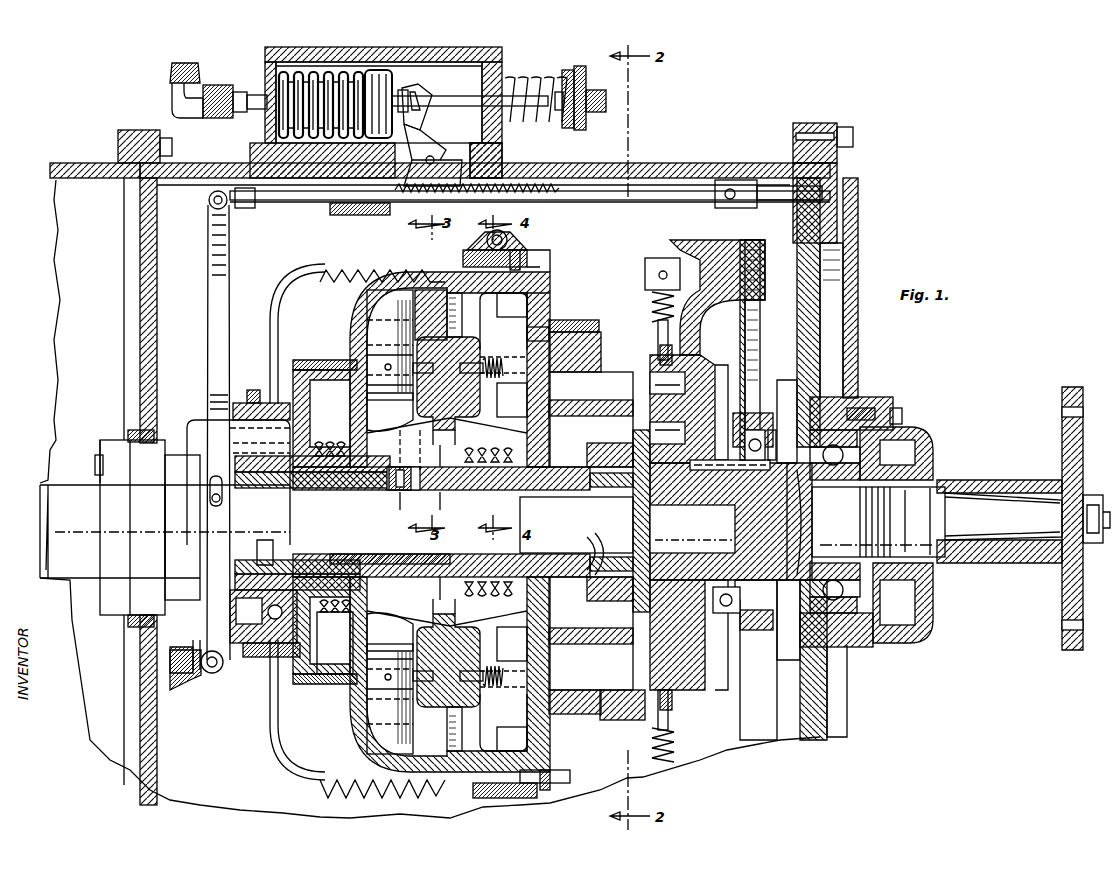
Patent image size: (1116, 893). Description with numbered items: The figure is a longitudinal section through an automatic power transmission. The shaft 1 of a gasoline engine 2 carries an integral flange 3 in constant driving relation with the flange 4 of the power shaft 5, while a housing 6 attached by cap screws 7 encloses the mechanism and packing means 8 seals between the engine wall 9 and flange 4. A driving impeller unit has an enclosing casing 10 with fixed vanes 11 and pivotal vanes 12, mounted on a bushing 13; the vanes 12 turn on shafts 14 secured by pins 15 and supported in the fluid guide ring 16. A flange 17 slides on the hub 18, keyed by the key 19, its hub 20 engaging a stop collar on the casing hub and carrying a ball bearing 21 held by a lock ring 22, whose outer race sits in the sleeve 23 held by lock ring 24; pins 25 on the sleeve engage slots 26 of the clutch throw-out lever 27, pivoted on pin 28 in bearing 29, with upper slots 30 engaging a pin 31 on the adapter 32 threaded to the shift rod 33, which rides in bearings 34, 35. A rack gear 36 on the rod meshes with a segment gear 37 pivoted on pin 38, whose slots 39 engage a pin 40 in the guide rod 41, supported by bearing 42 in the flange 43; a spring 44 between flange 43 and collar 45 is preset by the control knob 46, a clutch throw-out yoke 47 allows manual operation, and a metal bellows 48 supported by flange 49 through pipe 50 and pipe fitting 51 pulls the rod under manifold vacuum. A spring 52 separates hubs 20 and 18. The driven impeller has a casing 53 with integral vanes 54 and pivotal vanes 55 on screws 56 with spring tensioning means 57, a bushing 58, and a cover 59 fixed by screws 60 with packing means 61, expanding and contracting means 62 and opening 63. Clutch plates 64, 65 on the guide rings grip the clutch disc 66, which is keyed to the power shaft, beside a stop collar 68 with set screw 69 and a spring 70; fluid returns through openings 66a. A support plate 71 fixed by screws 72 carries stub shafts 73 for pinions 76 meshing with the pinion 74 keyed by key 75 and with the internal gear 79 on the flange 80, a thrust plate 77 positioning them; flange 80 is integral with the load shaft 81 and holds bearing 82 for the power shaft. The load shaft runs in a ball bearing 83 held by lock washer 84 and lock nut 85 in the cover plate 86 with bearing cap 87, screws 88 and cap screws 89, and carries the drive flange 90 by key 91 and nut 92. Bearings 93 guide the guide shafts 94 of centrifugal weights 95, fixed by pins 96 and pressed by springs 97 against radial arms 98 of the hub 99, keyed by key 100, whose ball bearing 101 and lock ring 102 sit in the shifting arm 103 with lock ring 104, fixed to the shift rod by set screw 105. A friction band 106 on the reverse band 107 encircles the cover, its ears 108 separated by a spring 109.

The shaft 1 is at (50, 505).
The gasoline engine 2 is at (80, 165).
The flange 3 is at (112, 444).
The flange 4 is at (140, 524).
The power shaft 5 is at (178, 500).
The housing 6 is at (200, 165).
The cap screws 7 is at (162, 135).
The packing means 8 is at (130, 430).
The wall 9 is at (158, 340).
The enclosing casing 10 is at (352, 306).
The vanes 11 is at (380, 424).
The vanes 12 is at (356, 745).
The bushing 13 is at (334, 490).
The shafts 14 is at (352, 358).
The pins 15 is at (390, 365).
The fluid guide ring 16 is at (462, 332).
The flange 17 is at (290, 370).
The hub 18 is at (356, 490).
The key 19 is at (330, 598).
The hub 20 is at (266, 542).
The ball bearing 21 is at (335, 643).
The lock ring 22 is at (263, 616).
The sleeve 23 is at (192, 418).
The lock ring 24 is at (248, 648).
The pins 25 is at (224, 518).
The slots 26 is at (224, 530).
The clutch throw-out lever 27 is at (206, 255).
The pin 28 is at (213, 673).
The bearing 29 is at (196, 680).
The slots 30 is at (213, 206).
The pin 31 is at (210, 199).
The adapter 32 is at (250, 206).
The shift rod 33 is at (306, 200).
The bearing 34 is at (360, 214).
The bearing 35 is at (796, 220).
The rack gear 36 is at (530, 188).
The segment gear 37 is at (433, 171).
The pin 38 is at (432, 138).
The slots 39 is at (428, 126).
The pin 40 is at (420, 92).
The guide rod 41 is at (457, 96).
The bearing 42 is at (508, 176).
The flange 43 is at (500, 64).
The spring 44 is at (540, 74).
The collar 45 is at (568, 68).
The control knob 46 is at (585, 118).
The clutch throw-out yoke 47 is at (586, 68).
The metal bellows 48 is at (250, 90).
The flange 49 is at (268, 62).
The pipe 50 is at (252, 108).
The pipe fitting 51 is at (178, 66).
The spring 52 is at (334, 442).
The enclosing casing 53 is at (552, 275).
The vanes 54 is at (464, 268).
The vanes 55 is at (535, 300).
The screws 56 is at (496, 360).
The spring tensioning means 57 is at (520, 416).
The bushing 58 is at (544, 490).
The cover 59 is at (296, 268).
The screws 60 is at (522, 262).
The packing means 61 is at (262, 420).
The expanding and contracting means 62 is at (390, 268).
The opening 63 is at (438, 520).
The clutch plate 64 is at (447, 522).
The clutch plate 65 is at (480, 607).
The clutch disc 66 is at (440, 456).
The openings 66a is at (450, 615).
The stop collar 68 is at (428, 496).
The set screw 69 is at (392, 492).
The spring 70 is at (498, 598).
The support plate 71 is at (572, 322).
The screws 72 is at (600, 324).
The stub shafts 73 is at (591, 531).
The pinion 74 is at (600, 548).
The key 75 is at (612, 505).
The pinions 76 is at (660, 385).
The thrust plate 77 is at (680, 415).
The internal gear 79 is at (610, 722).
The flange 80 is at (718, 380).
The load shaft 81 is at (944, 580).
The bearing 82 is at (676, 505).
The ball bearing 83 is at (850, 410).
The lock washer 84 is at (858, 455).
The lock nut 85 is at (915, 455).
The cover plate 86 is at (826, 320).
The bearing cap 87 is at (874, 402).
The screws 88 is at (898, 406).
The cap screws 89 is at (848, 130).
The drive flange 90 is at (1062, 398).
The key 91 is at (1015, 476).
The nut 92 is at (1085, 498).
The bearings 93 is at (674, 352).
The guide shafts 94 is at (670, 342).
The centrifugal weights 95 is at (646, 262).
The pins 96 is at (664, 256).
The springs 97 is at (676, 318).
The radial arms 98 is at (740, 248).
The hub 99 is at (720, 470).
The key 100 is at (735, 470).
The ball bearing 101 is at (735, 612).
The lock ring 102 is at (760, 440).
The shifting arm 103 is at (758, 342).
The lock ring 104 is at (762, 412).
The set screw 105 is at (735, 190).
The friction band 106 is at (512, 798).
The reverse band 107 is at (530, 798).
The ears 108 is at (518, 238).
The spring 109 is at (488, 236).